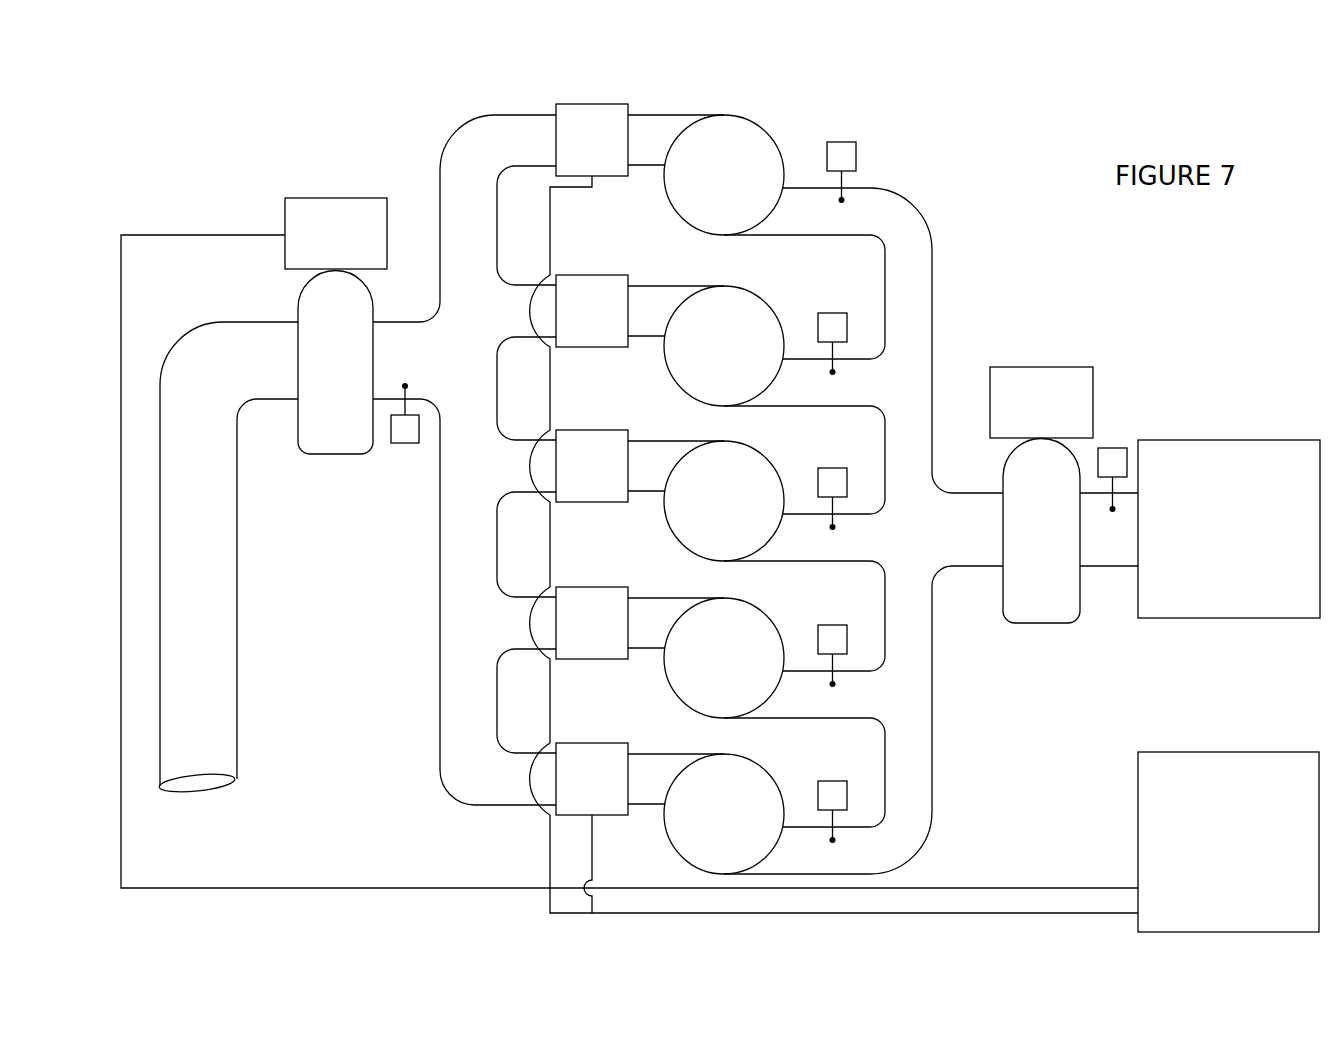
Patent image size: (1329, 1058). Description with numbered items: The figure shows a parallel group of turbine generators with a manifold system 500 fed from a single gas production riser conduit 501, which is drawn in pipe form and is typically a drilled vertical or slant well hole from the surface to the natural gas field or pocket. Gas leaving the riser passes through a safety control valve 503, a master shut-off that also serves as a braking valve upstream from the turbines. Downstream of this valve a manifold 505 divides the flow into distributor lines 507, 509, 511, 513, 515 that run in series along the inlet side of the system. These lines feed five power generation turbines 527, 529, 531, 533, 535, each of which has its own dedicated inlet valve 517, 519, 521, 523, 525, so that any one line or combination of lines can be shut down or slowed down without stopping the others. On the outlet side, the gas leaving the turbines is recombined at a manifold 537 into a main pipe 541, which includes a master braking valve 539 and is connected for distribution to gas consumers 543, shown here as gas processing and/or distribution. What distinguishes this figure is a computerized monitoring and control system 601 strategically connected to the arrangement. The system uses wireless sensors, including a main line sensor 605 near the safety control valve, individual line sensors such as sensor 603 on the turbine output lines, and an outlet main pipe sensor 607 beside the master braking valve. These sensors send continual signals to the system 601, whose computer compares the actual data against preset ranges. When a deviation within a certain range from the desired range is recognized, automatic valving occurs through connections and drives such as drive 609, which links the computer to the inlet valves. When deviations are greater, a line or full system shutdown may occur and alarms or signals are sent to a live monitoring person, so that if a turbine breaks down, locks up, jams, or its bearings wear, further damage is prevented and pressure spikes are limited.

The natural gas power generation system 500 is at (1010, 262).
The riser conduit 501 is at (237, 662).
The safety control valve 503 is at (315, 456).
The manifold 505 is at (440, 585).
The distributor line 507 is at (515, 115).
The distributor line 509 is at (521, 275).
The distributor line 511 is at (521, 430).
The distributor line 513 is at (521, 587).
The connecting pipe between inlet valves 515 is at (521, 743).
The inlet valve 517 is at (572, 104).
The inlet valve 519 is at (574, 275).
The inlet valve 521 is at (574, 430).
The inlet valve 523 is at (574, 587).
The inlet valve 525 is at (574, 743).
The turbine 527 is at (773, 142).
The turbine 529 is at (774, 318).
The turbine 531 is at (773, 477).
The turbine 533 is at (774, 637).
The turbine 535 is at (774, 792).
The manifold 537 is at (933, 778).
The master braking valve 539 is at (1043, 624).
The main pipe 541 is at (1100, 567).
The gas consumers 543 is at (1229, 440).
The computerized monitoring and control system 601 is at (1231, 752).
The individual line sensor 603 is at (857, 157).
The main line sensor 605 is at (400, 446).
The outlet main pipe sensor 607 is at (1112, 448).
The drive 609 is at (592, 817).